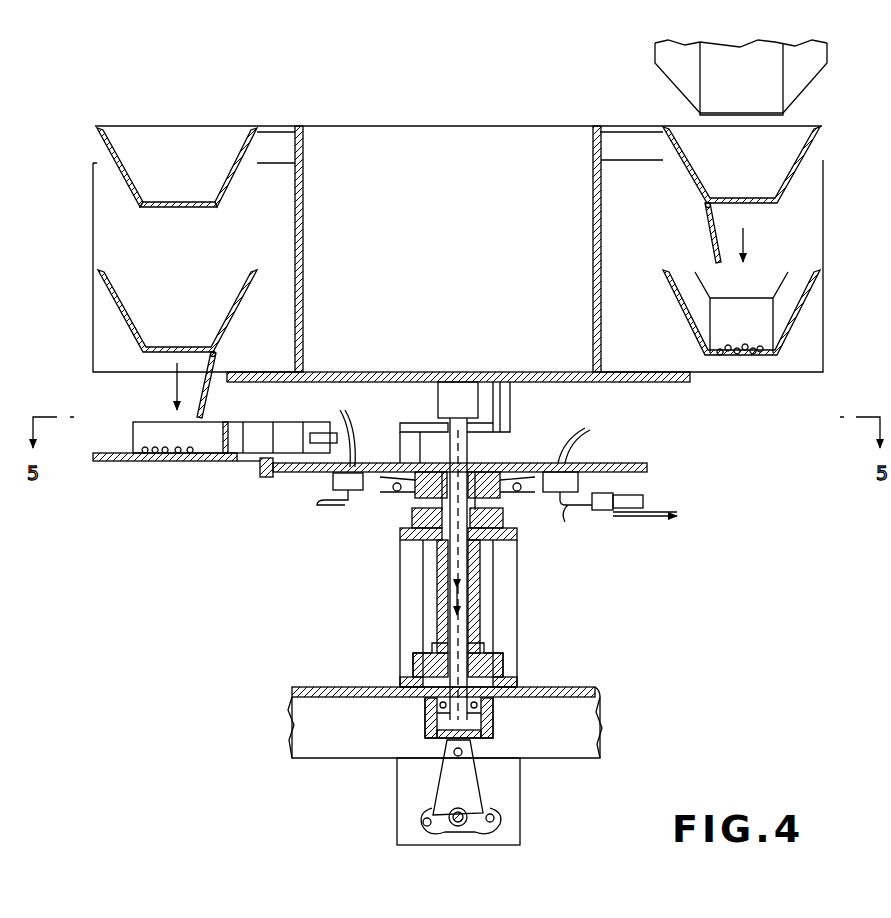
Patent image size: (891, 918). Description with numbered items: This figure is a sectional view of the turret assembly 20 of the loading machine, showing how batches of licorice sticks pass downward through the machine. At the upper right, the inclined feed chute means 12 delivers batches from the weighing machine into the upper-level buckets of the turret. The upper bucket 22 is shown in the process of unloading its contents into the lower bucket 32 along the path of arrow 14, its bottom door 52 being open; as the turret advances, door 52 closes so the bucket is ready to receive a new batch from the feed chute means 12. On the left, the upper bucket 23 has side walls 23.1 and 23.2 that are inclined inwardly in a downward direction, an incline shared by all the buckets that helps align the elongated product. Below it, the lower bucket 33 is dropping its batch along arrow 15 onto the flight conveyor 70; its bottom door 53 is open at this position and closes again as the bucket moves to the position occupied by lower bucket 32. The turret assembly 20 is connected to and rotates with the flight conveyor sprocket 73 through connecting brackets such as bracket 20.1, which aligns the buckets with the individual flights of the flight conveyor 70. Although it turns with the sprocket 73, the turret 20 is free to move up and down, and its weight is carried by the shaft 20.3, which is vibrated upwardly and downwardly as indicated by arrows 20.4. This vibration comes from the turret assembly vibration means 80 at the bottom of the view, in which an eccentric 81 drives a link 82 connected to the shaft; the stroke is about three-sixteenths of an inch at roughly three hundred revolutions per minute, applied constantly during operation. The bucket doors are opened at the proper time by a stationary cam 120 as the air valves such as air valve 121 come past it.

The inclined feed chute means 12 is at (812, 73).
The arrow 14 is at (745, 240).
The arrow 15 is at (175, 388).
The turret assembly 20 is at (353, 122).
The connecting bracket 20.1 is at (502, 380).
The shaft 20.3 is at (470, 447).
The arrows 20.4 is at (462, 602).
The bucket 22 is at (800, 130).
The bucket 23 is at (168, 138).
The side wall 23.1 is at (120, 168).
The side wall 23.2 is at (238, 142).
The lower bucket 32 is at (807, 273).
The lower bucket 33 is at (127, 282).
The door 52 is at (707, 223).
The door 53 is at (208, 403).
The flight conveyor 70 is at (104, 464).
The flight conveyor sprocket 73 is at (620, 463).
The turret assembly vibration means 80 is at (509, 810).
The eccentric 81 is at (461, 825).
The link 82 is at (468, 775).
The stationary cam 120 is at (610, 494).
The air valve 121 is at (582, 521).